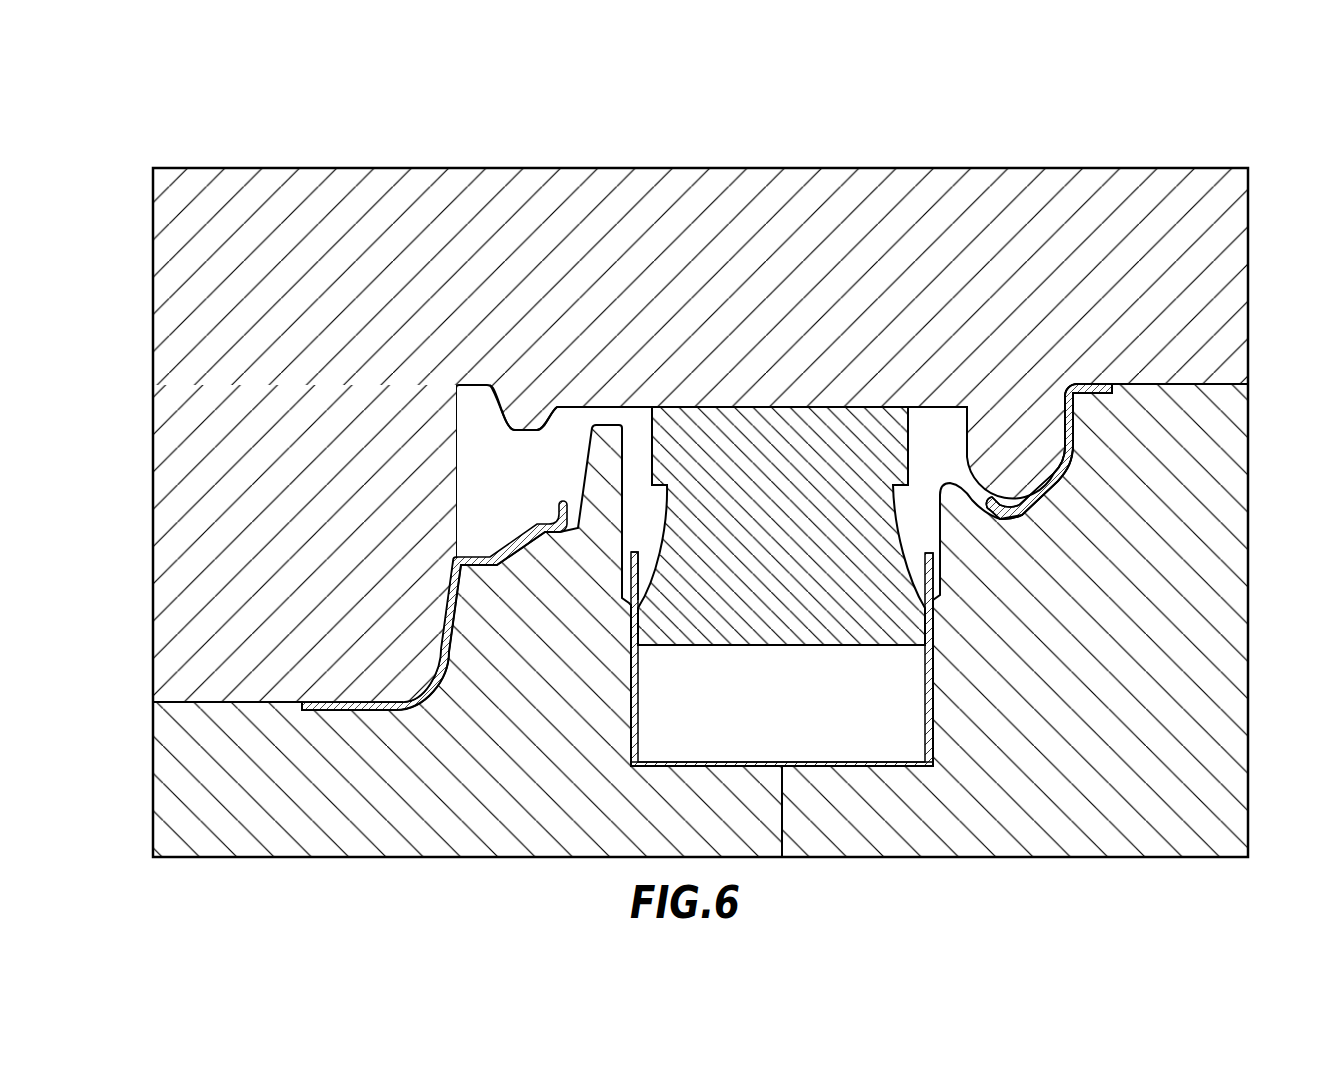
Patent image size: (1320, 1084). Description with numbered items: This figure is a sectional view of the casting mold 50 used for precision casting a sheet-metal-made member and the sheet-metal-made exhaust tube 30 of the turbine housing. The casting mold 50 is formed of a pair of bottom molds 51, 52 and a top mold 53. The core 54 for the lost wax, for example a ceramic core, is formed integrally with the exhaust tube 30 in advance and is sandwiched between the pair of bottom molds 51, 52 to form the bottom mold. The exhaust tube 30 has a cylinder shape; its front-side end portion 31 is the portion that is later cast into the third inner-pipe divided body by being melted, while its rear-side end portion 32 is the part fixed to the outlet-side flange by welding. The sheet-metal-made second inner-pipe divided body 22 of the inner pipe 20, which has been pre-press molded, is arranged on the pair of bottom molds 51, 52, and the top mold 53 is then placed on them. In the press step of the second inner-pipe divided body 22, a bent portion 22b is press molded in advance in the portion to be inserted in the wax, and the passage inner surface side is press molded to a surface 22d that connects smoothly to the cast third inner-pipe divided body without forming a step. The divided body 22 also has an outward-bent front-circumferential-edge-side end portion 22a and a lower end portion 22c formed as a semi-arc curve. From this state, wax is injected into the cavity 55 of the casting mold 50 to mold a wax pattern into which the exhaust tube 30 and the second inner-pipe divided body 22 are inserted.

The casting mold 50 is at (788, 148).
The bottom mold 51 is at (1240, 660).
The bottom mold 52 is at (175, 777).
The top mold 53 is at (625, 197).
The core for the lost wax 54 is at (783, 415).
The cavity 55 is at (549, 426).
The exhaust tube 30 is at (827, 659).
The front-side end portion 31 is at (935, 568).
The rear-side end portion 32 is at (934, 750).
The inner pipe 20 is at (750, 587).
The second inner-pipe divided body 22 is at (750, 587).
The front-circumferential-edge-side end portion 22a is at (1095, 392).
The bent portion 22b is at (996, 521).
The lower end portion 22c is at (320, 712).
The surface 22d is at (1050, 472).